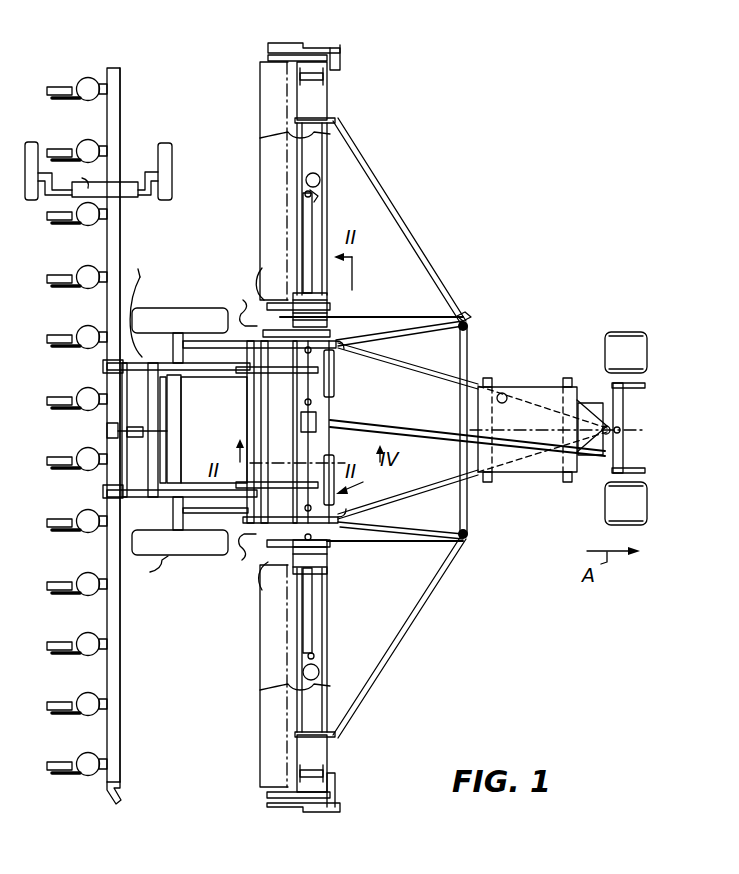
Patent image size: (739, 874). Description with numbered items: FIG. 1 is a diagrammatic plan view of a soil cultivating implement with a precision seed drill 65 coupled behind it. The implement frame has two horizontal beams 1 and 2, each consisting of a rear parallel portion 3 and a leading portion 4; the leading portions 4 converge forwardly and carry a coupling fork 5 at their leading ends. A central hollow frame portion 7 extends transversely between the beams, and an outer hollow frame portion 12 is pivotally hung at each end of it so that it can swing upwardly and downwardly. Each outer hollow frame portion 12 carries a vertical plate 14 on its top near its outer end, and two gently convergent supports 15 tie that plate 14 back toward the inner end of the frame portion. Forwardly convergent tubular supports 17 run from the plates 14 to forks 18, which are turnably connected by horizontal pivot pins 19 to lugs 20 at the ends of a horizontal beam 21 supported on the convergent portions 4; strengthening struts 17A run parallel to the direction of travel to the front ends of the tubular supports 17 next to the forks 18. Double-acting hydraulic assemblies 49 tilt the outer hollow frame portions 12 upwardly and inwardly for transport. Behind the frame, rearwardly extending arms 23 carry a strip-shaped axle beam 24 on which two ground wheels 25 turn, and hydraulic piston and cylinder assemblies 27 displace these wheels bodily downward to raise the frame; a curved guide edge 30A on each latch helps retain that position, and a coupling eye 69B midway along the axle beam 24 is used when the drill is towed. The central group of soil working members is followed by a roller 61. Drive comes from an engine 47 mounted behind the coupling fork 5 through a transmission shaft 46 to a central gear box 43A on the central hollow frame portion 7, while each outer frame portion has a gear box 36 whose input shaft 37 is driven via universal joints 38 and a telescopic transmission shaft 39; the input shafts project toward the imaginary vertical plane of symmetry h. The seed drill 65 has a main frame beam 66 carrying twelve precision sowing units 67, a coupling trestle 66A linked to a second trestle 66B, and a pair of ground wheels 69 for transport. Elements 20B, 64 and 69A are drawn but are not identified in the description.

The frame beam 1 is at (418, 452).
The frame beam 2 is at (418, 372).
The rear substantially parallel portion 3 is at (244, 432).
The leading portion 4 is at (484, 380).
The coupling fork 5 is at (434, 494).
The central hollow frame portion 7 is at (320, 398).
The outer hollow frame portion 12 is at (322, 96).
The substantially vertical plate 14 is at (334, 120).
The support 15 is at (274, 411).
The tubular support 17 is at (350, 154).
The strengthening strut 17A is at (400, 316).
The fork 18 is at (464, 320).
The horizontal pivot pin 19 is at (470, 317).
The lug 20 is at (460, 332).
The arm 20B is at (152, 268).
The horizontal beam 21 is at (467, 508).
The rearwardly extending arm 23 is at (219, 330).
The strip-shaped axle beam 24 is at (184, 450).
The ground wheel 25 is at (154, 310).
The hydraulic piston and cylinder assembly 27 is at (261, 269).
The curved guide edge 30A is at (168, 452).
The gear box 36 is at (306, 180).
The rotary input shaft 37 is at (304, 194).
The universal joint 38 is at (316, 196).
The telescopic transmission shaft 39 is at (308, 219).
The central gear box 43A is at (320, 410).
The transmission shaft 46 is at (430, 434).
The engine 47 is at (544, 362).
The double-acting assembly 49 is at (336, 378).
The roller 61 is at (258, 91).
The end plate 64 is at (293, 26).
The precision seed drill 65 is at (124, 626).
The main frame beam 66 is at (106, 297).
The coupling member or trestle 66A is at (159, 392).
The second coupling member or trestle 66B is at (162, 416).
The precision sowing unit 67 is at (88, 77).
The ground wheel 69 is at (168, 142).
The beam tip 69A is at (112, 806).
The coupling eye 69B is at (110, 414).
The imaginary vertical plane of substantial symmetry h is at (646, 416).